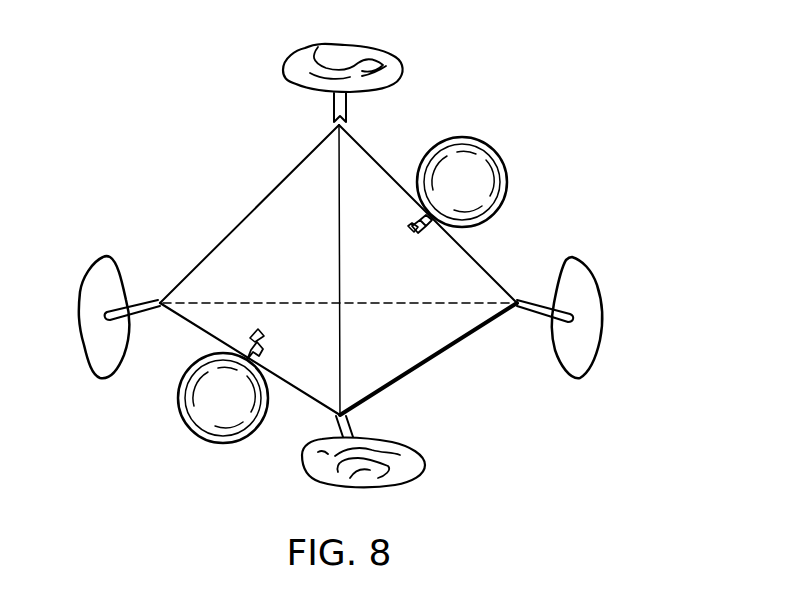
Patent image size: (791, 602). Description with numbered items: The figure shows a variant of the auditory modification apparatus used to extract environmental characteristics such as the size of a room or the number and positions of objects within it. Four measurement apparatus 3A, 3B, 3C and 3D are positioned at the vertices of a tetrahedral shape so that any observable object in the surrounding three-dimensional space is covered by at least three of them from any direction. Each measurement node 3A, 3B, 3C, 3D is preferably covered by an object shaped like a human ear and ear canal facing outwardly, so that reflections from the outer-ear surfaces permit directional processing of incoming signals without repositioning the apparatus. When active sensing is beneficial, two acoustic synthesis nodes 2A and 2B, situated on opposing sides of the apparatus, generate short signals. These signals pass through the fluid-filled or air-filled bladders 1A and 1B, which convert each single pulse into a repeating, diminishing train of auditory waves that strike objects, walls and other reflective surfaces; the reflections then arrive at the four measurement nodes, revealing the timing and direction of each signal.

The fluid-filled or air-filled bladder 1A is at (462, 182).
The fluid-filled or air-filled bladder 1B is at (223, 398).
The acoustic synthesis node 2A is at (410, 217).
The acoustic synthesis node 2B is at (272, 352).
The measurement apparatus 3A is at (576, 317).
The measurement apparatus 3B is at (363, 464).
The measurement apparatus 3C is at (343, 70).
The measurement apparatus 3D is at (102, 317).